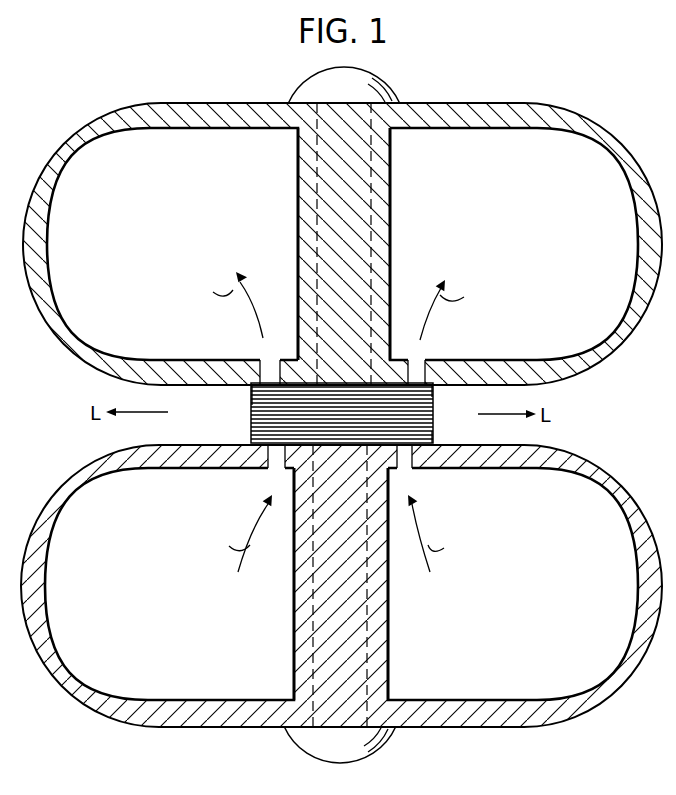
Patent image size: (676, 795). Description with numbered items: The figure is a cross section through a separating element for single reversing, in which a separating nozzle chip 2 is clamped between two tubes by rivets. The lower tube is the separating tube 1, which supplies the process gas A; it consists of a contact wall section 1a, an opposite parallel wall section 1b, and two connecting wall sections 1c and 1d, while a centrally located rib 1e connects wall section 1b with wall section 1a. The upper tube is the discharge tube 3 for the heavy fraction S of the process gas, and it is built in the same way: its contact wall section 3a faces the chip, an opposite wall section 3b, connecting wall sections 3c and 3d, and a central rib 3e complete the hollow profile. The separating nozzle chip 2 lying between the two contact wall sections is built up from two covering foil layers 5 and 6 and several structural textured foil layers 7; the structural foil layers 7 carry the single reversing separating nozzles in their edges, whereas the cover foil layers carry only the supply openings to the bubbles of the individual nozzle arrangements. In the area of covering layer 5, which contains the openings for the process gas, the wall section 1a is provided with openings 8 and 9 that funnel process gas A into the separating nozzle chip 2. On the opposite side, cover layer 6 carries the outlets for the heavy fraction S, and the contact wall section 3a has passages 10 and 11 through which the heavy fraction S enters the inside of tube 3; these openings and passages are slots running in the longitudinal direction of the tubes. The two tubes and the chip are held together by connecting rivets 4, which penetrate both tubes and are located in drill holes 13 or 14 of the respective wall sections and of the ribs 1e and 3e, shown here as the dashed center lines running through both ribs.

The separating tube 1 is at (341, 617).
The contact wall section 1a is at (472, 462).
The opposite parallel wall section 1b is at (423, 728).
The connecting wall section 1c is at (46, 598).
The connecting wall section 1d is at (638, 588).
The centrally located rib 1e is at (297, 583).
The separating nozzle chip 2 is at (244, 426).
The discharge tube 3 is at (342, 218).
The contact wall section 3a is at (480, 370).
The wall section 3b is at (218, 108).
The connecting wall section 3c is at (48, 235).
The connecting wall section 3d is at (637, 240).
The rib 3e is at (390, 202).
The connecting rivets 4 is at (306, 740).
The covering foil layer 5 is at (436, 440).
The covering foil layer 6 is at (436, 388).
The structural textured foil layers 7 is at (252, 400).
The opening 8 is at (273, 466).
The opening 9 is at (410, 466).
The passage 10 is at (268, 360).
The passage 11 is at (418, 372).
The drill hole 13 is at (365, 622).
The drill hole 14 is at (373, 265).